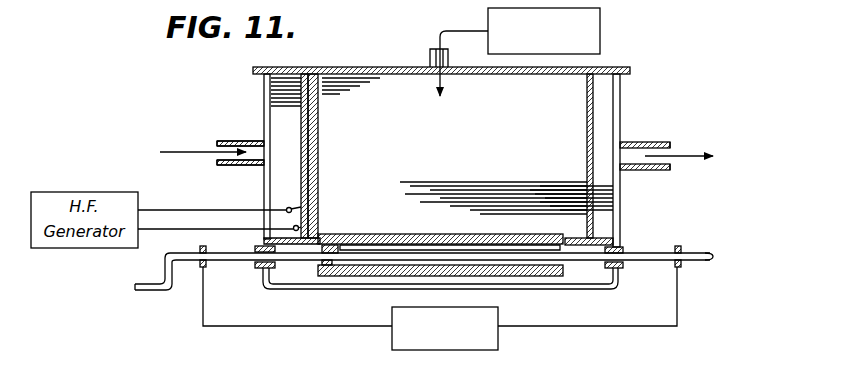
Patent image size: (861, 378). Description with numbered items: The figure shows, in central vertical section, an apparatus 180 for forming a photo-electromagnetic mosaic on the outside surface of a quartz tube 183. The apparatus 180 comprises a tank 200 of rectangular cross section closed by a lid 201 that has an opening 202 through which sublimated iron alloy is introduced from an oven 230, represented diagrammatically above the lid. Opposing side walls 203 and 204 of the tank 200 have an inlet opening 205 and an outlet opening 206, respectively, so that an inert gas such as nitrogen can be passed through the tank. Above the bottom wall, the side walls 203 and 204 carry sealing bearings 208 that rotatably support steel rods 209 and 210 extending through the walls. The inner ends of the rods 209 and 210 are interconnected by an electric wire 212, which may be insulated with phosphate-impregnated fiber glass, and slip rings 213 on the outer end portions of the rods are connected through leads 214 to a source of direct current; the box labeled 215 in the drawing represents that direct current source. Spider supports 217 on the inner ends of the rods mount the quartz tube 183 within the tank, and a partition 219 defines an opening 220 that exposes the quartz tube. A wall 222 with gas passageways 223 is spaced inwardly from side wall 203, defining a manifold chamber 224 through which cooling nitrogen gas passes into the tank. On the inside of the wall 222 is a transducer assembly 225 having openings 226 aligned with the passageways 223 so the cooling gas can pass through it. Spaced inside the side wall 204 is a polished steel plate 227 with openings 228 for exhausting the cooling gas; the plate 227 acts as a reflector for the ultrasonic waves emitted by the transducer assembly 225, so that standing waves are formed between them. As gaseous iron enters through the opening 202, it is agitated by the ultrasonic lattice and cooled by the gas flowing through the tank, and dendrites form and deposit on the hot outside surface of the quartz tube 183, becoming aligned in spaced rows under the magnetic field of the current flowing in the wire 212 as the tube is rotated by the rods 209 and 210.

The apparatus 180 is at (635, 89).
The quartz tube 183 is at (471, 235).
The tank 200 is at (622, 125).
The lid 201 is at (374, 66).
The opening 202 is at (428, 49).
The side wall 203 is at (263, 77).
The side wall 204 is at (615, 200).
The inlet opening 205 is at (235, 166).
The outlet opening 206 is at (667, 170).
The sealing bearings 208 is at (278, 262).
The steel rod 209 is at (236, 262).
The steel rod 210 is at (700, 254).
The electric wire 212 is at (522, 277).
The slip rings 213 is at (201, 266).
The leads 214 is at (294, 325).
The D.C. source 215 is at (498, 346).
The spider supports 217 is at (358, 244).
The partition 219 is at (605, 241).
The opening 220 is at (321, 236).
The wall 222 is at (301, 84).
The gas passageways 223 is at (300, 107).
The manifold chamber 224 is at (284, 118).
The transducer assembly 225 is at (322, 146).
The openings 226 is at (319, 108).
The polished steel plate 227 is at (587, 118).
The openings 228 is at (587, 150).
The oven 230 is at (600, 21).